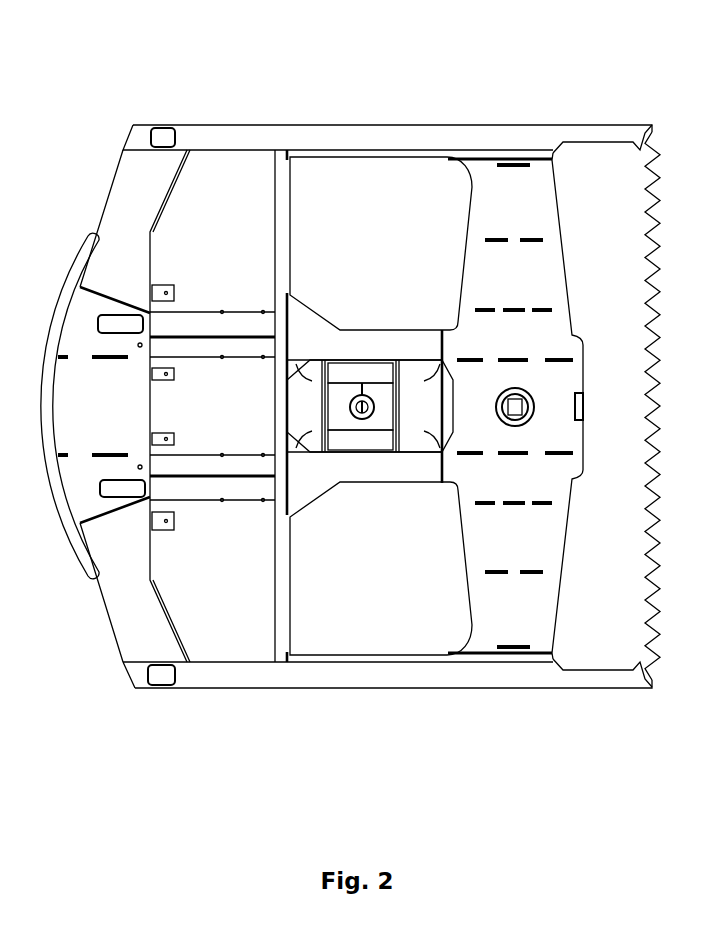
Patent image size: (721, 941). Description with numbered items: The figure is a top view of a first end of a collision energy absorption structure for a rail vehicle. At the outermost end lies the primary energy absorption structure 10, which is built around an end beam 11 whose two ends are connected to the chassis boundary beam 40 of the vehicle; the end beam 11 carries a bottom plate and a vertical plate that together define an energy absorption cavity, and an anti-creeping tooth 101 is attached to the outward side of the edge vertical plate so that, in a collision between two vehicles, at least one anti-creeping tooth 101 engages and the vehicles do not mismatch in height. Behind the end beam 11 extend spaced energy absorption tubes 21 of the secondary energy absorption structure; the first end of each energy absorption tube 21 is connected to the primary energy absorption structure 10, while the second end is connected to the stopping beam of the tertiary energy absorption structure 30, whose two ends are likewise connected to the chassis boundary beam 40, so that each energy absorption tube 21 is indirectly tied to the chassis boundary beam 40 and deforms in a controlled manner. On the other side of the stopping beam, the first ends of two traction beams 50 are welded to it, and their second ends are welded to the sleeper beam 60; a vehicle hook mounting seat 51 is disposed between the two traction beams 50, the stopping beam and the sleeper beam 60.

The primary energy absorption structure 10 is at (127, 257).
The end beam 11 is at (130, 607).
The anti-creeping tooth 101 is at (84, 238).
The energy absorption tube 21 is at (203, 485).
The tertiary energy absorption structure 30 is at (283, 615).
The chassis boundary beam 40 is at (590, 676).
The traction beam 50 is at (313, 485).
The vehicle hook mounting seat 51 is at (380, 398).
The sleeper beam 60 is at (507, 215).